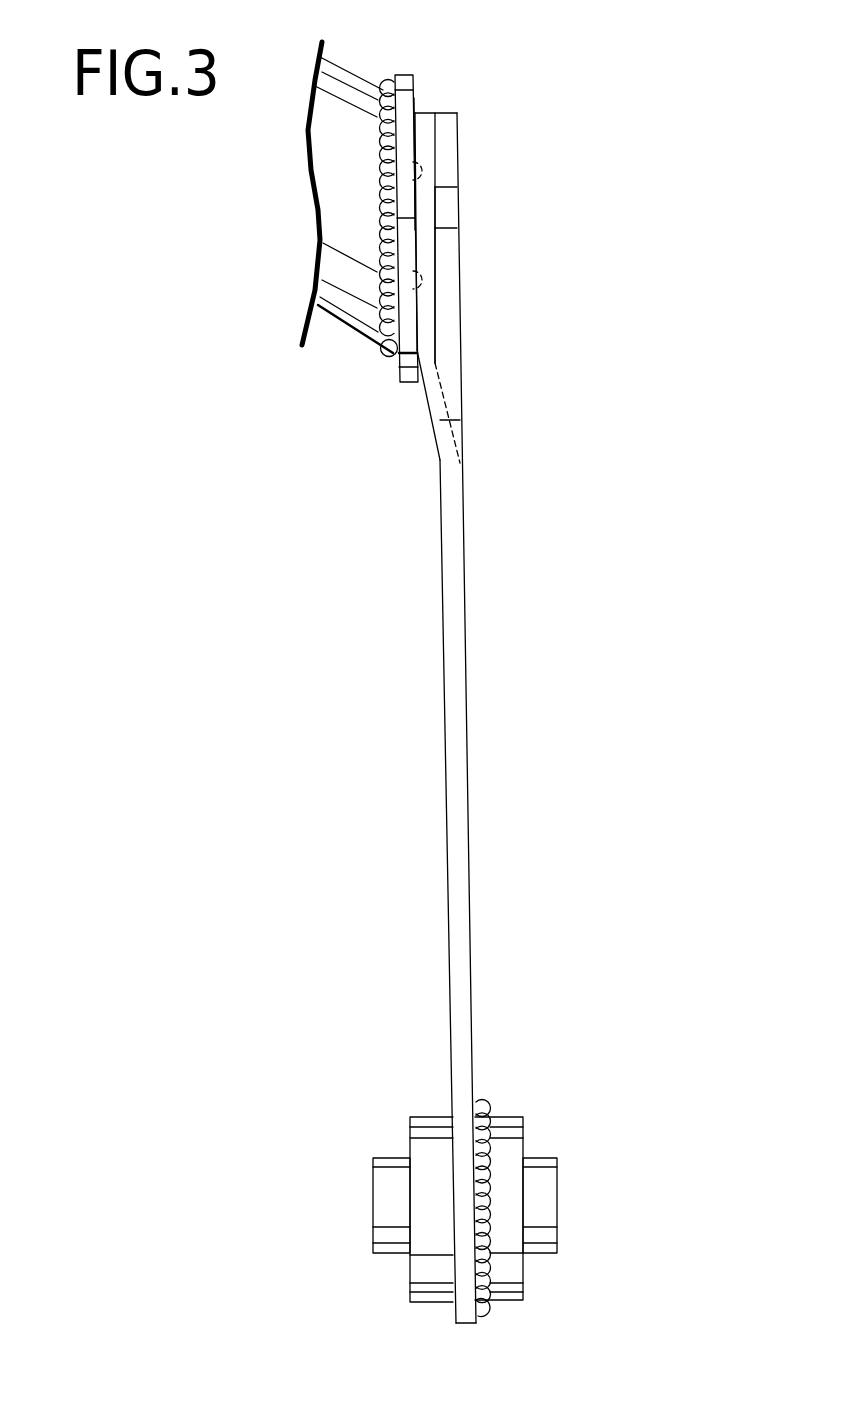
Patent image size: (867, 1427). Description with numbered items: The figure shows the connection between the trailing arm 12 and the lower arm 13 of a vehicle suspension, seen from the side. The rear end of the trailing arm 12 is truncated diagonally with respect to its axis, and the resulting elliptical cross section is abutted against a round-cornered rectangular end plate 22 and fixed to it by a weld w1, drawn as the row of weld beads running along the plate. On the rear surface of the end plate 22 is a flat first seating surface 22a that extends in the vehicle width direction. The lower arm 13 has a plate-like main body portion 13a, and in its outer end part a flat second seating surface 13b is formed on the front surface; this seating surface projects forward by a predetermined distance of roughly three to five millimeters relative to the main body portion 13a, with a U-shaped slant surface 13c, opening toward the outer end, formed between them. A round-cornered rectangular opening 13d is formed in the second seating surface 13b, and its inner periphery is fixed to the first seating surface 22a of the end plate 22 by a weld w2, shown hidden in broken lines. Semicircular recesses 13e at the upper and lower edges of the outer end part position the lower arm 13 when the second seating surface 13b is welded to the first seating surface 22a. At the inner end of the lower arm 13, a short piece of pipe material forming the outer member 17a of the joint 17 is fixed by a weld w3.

The trailing arm 12 is at (350, 339).
The lower arm 13 is at (397, 718).
The main body portion 13a is at (448, 630).
The second seating surface 13b is at (380, 218).
The slant surface 13c is at (430, 408).
The opening 13d is at (437, 282).
The semicircular recesses 13e is at (442, 187).
The joint 17 is at (481, 1165).
The outer member 17a is at (423, 1118).
The end plate 22 is at (408, 66).
The first seating surface 22a is at (415, 100).
The weld w1 is at (380, 87).
The weld w2 is at (437, 171).
The weld w3 is at (477, 1103).